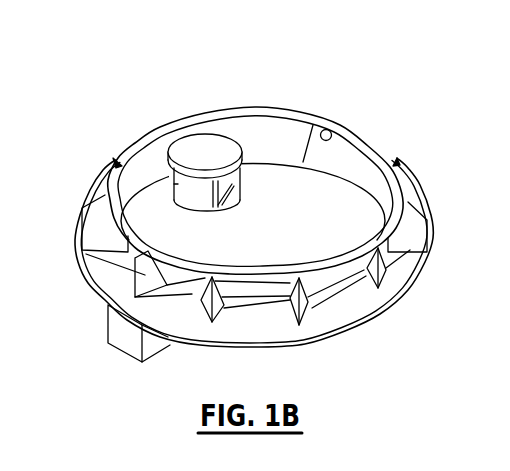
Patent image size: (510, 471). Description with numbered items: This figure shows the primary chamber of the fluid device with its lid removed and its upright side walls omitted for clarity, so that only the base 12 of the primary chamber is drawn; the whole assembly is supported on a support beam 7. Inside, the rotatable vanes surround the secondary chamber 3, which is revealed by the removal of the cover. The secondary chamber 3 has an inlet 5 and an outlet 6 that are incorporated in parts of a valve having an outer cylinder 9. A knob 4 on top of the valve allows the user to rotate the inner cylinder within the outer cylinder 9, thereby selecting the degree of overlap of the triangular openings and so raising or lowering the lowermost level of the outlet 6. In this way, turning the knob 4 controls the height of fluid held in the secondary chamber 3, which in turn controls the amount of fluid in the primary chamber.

The secondary chamber 3 is at (250, 103).
The knob 4 is at (188, 150).
The inlet 5 is at (331, 127).
The outlet 6 is at (236, 188).
The support beam 7 is at (116, 333).
The outer cylinder 9 is at (170, 183).
The base 12 is at (350, 326).